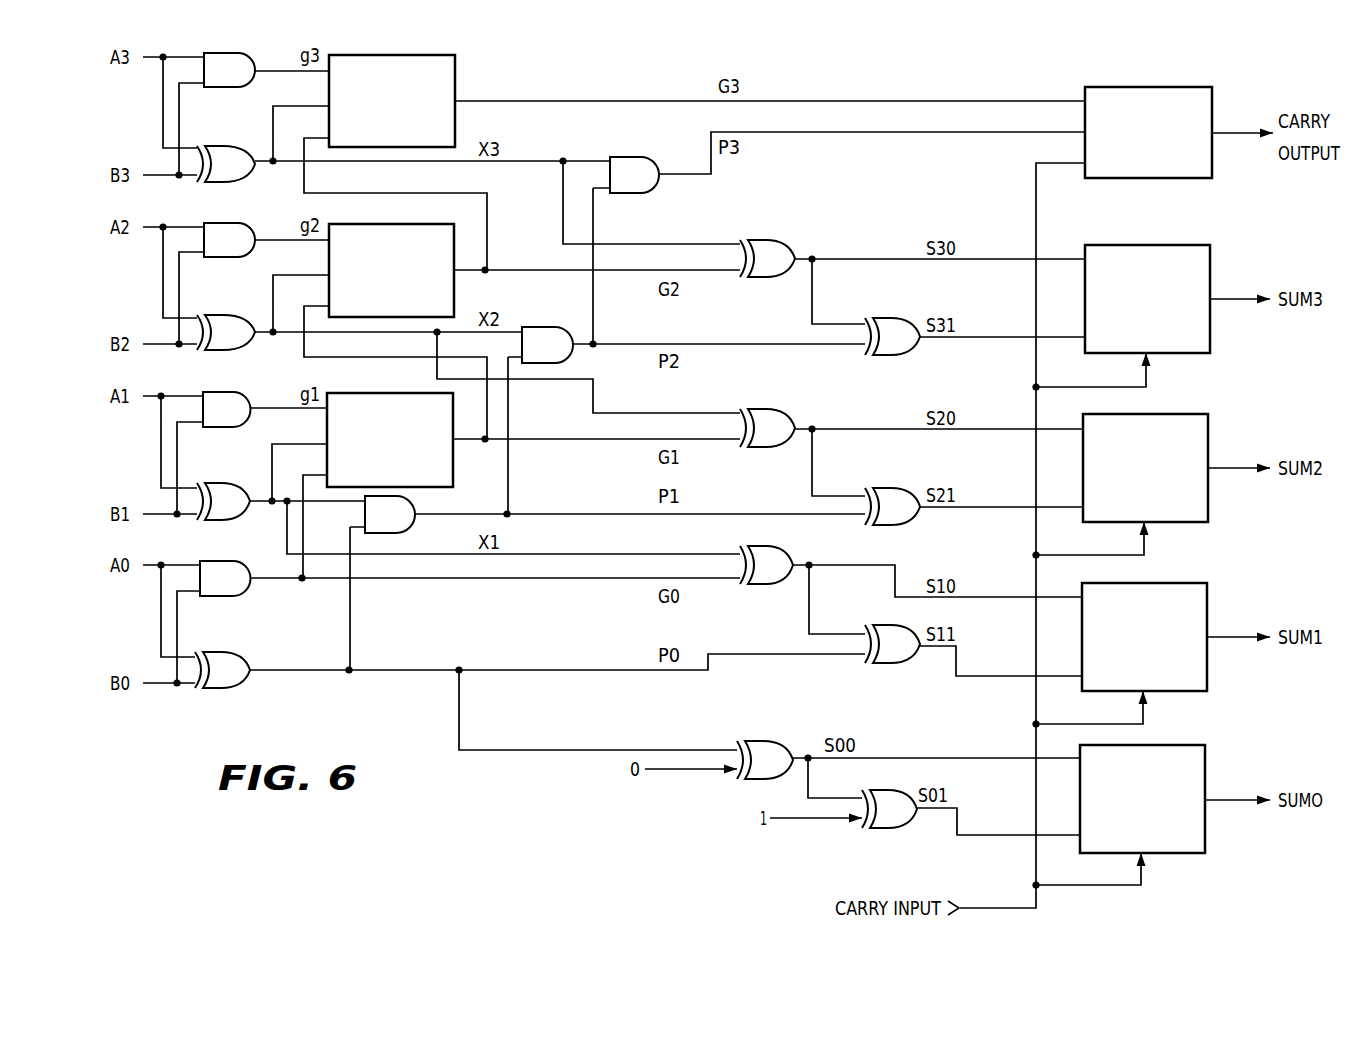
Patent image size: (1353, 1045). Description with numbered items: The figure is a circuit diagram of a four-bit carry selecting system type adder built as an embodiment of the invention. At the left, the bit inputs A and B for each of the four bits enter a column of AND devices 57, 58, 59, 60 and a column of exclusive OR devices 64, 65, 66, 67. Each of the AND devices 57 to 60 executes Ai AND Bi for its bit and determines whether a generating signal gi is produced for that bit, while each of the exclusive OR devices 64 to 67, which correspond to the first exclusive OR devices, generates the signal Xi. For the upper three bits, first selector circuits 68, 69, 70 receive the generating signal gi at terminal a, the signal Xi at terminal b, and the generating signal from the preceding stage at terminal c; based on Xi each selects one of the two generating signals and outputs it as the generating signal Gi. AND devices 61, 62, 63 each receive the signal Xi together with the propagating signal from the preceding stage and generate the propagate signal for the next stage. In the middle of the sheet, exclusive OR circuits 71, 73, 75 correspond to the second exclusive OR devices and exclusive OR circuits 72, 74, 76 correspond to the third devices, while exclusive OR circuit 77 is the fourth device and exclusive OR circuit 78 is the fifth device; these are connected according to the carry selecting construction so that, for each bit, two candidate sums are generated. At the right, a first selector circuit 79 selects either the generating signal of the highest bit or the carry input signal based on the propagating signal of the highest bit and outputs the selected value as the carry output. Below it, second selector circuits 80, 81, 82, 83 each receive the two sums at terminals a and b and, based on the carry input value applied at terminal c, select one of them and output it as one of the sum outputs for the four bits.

The AND device 57 is at (222, 86).
The AND device 58 is at (222, 256).
The AND device 59 is at (222, 426).
The AND device 60 is at (222, 595).
The AND device 61 is at (411, 526).
The AND device 62 is at (545, 327).
The AND device 63 is at (655, 186).
The exclusive OR device 64 is at (245, 174).
The exclusive OR device 65 is at (245, 343).
The exclusive OR device 66 is at (245, 512).
The exclusive OR device 67 is at (245, 682).
The first selector circuit 68 is at (456, 75).
The first selector circuit 69 is at (456, 240).
The first selector circuit 70 is at (453, 471).
The exclusive OR circuit 71 is at (789, 246).
The exclusive OR circuit 72 is at (905, 350).
The exclusive OR circuit 73 is at (789, 416).
The exclusive OR circuit 74 is at (903, 520).
The exclusive OR circuit 75 is at (786, 556).
The exclusive OR circuit 76 is at (905, 658).
The exclusive OR circuit 77 is at (783, 741).
The exclusive OR circuit 78 is at (903, 820).
The first selector circuit 79 is at (1212, 98).
The second selector circuit 80 is at (1210, 263).
The second selector circuit 81 is at (1208, 432).
The second selector circuit 82 is at (1207, 601).
The second selector circuit 83 is at (1205, 763).